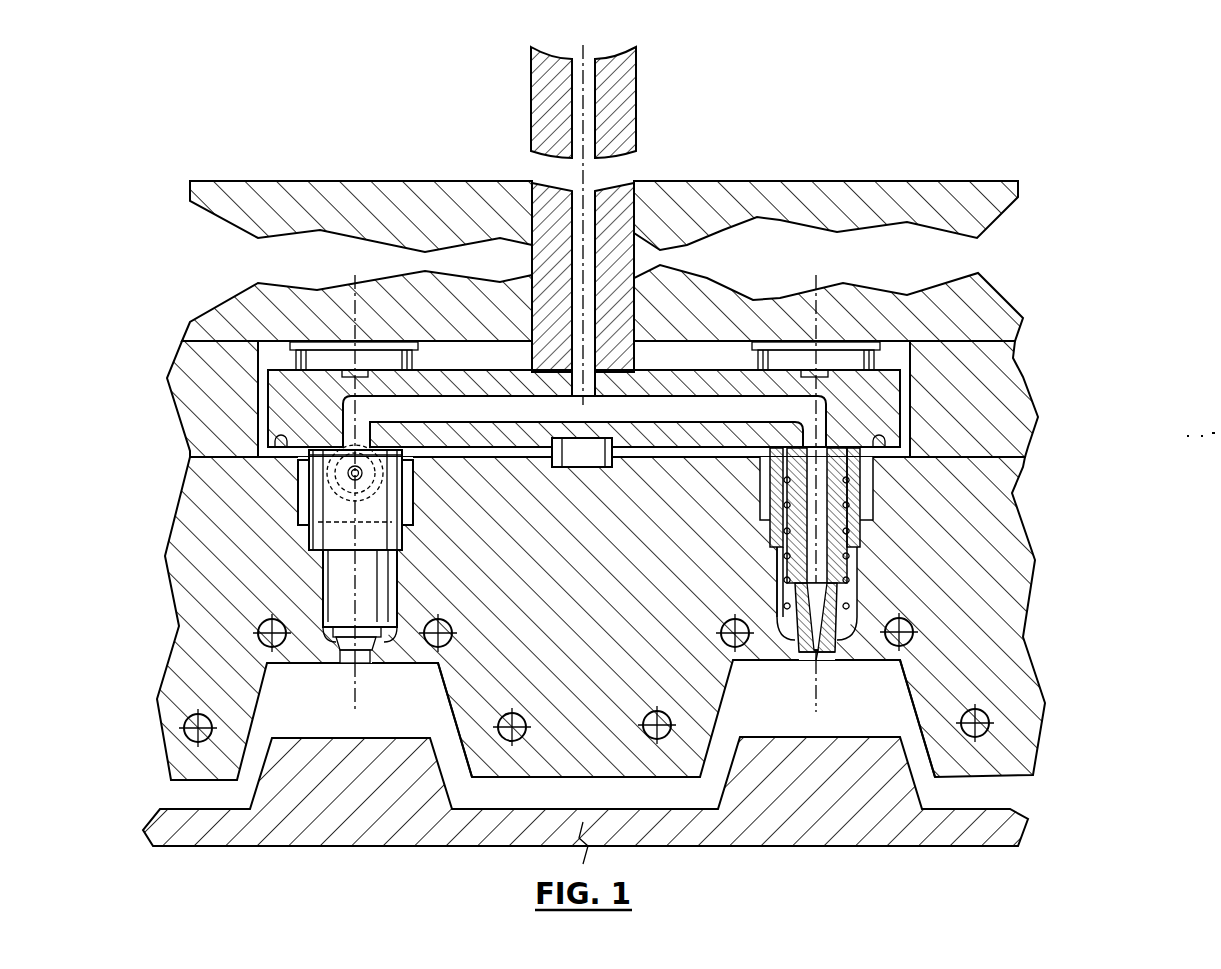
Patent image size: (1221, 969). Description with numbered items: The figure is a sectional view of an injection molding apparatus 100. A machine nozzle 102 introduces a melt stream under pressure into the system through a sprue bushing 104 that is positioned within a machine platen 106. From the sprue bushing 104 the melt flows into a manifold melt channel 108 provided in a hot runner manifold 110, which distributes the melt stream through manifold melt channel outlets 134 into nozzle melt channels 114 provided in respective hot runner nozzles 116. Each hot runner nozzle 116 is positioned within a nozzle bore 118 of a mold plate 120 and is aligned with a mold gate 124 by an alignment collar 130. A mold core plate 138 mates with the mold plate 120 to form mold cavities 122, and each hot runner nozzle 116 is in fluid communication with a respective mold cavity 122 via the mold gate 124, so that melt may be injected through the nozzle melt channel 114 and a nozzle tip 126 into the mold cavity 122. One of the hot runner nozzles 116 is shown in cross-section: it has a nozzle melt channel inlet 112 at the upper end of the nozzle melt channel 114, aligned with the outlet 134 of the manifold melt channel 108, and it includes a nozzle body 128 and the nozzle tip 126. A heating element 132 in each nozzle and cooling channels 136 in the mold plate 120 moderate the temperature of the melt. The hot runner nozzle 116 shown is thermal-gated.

The injection molding apparatus 100 is at (1053, 245).
The machine nozzle 102 is at (623, 85).
The sprue bushing 104 is at (613, 207).
The machine platen 106 is at (920, 205).
The manifold melt channel 108 is at (697, 393).
The hot runner manifold 110 is at (280, 420).
The nozzle melt channel inlet 112 is at (878, 433).
The nozzle melt channel 114 is at (873, 523).
The hot runner nozzle 116 is at (924, 503).
The nozzle bore 118 is at (770, 608).
The mold plate 120 is at (1010, 667).
The mold cavity 122 is at (337, 717).
The mold gate 124 is at (843, 691).
The nozzle tip 126 is at (838, 637).
The nozzle body 128 is at (883, 537).
The alignment collar 130 is at (872, 478).
The heating element 132 is at (887, 593).
The manifold melt channel outlet 134 is at (352, 440).
The cooling channel 136 is at (987, 713).
The mold core plate 138 is at (1013, 812).